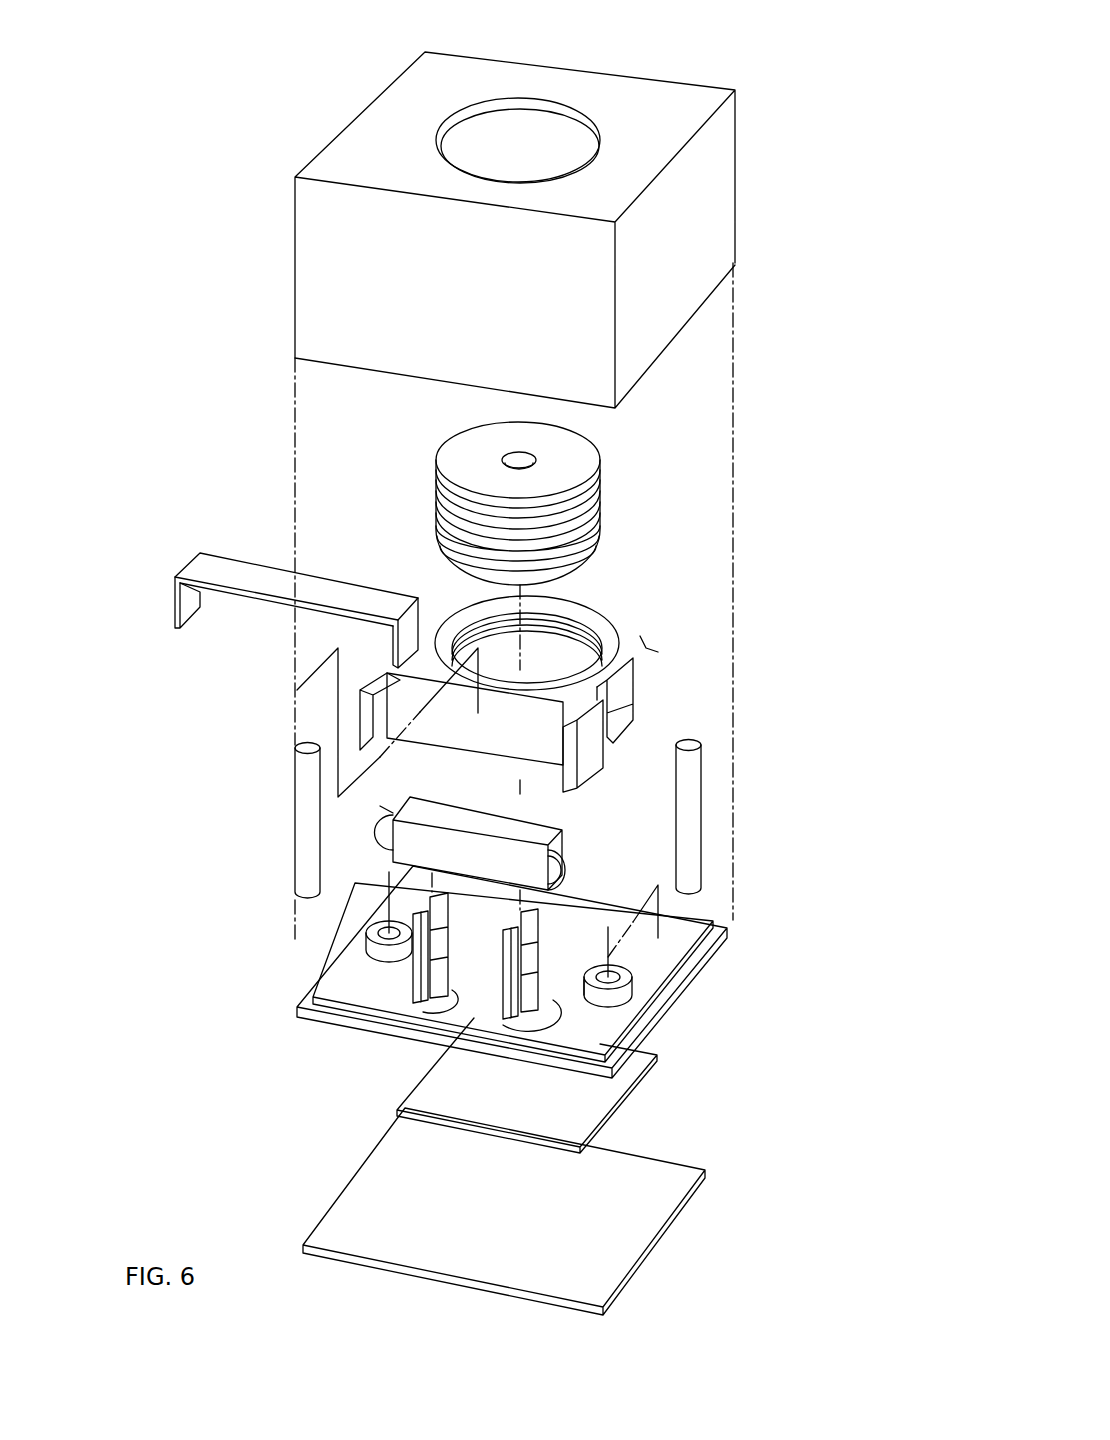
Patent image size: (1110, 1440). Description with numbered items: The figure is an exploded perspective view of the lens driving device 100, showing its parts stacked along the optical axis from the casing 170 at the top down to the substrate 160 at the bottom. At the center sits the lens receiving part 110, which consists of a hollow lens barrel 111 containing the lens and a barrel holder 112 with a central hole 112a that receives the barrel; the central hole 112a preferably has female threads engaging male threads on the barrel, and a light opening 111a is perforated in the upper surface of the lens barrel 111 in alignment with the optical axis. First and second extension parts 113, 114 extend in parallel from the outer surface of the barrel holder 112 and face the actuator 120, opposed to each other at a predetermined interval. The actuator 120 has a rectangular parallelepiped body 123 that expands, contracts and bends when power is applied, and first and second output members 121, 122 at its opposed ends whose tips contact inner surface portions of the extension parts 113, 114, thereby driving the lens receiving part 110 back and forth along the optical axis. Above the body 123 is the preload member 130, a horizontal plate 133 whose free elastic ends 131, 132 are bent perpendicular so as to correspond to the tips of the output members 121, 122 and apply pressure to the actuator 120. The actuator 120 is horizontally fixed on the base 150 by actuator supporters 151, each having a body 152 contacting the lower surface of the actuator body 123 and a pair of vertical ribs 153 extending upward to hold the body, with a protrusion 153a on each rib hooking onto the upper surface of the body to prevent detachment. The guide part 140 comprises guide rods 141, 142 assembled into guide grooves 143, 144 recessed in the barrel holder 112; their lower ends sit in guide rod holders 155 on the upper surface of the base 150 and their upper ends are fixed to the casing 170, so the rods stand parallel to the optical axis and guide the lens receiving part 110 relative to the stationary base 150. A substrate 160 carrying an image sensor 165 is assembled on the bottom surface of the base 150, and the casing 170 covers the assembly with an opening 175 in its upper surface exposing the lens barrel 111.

The lens driving device 100 is at (178, 328).
The lens receiving part 110 is at (667, 581).
The lens barrel 111 is at (634, 502).
The light opening 111a is at (535, 455).
The barrel holder 112 is at (632, 648).
The central hole 112a is at (572, 642).
The first extension part 113 is at (363, 700).
The second extension part 114 is at (587, 767).
The actuator 120 is at (329, 858).
The first output member 121 is at (378, 830).
The second output member 122 is at (560, 873).
The actuator body 123 is at (417, 850).
The preload member 130 is at (226, 603).
The free elastic end 131 is at (175, 605).
The free elastic end 132 is at (427, 618).
The horizontal plate 133 is at (195, 567).
The guide part 140 is at (516, 761).
The guide rod 141 is at (303, 779).
The guide rod 142 is at (690, 827).
The guide groove 143 is at (399, 660).
The guide groove 144 is at (607, 712).
The base 150 is at (648, 1017).
The actuator supporter 151 is at (110, 1003).
The body 152 is at (533, 993).
The vertical rib 153 is at (510, 957).
The protrusion 153a is at (430, 918).
The guide rod holder 155 is at (623, 988).
The substrate 160 is at (635, 1237).
The image sensor 165 is at (602, 1103).
The casing 170 is at (561, 214).
The opening 175 is at (582, 122).